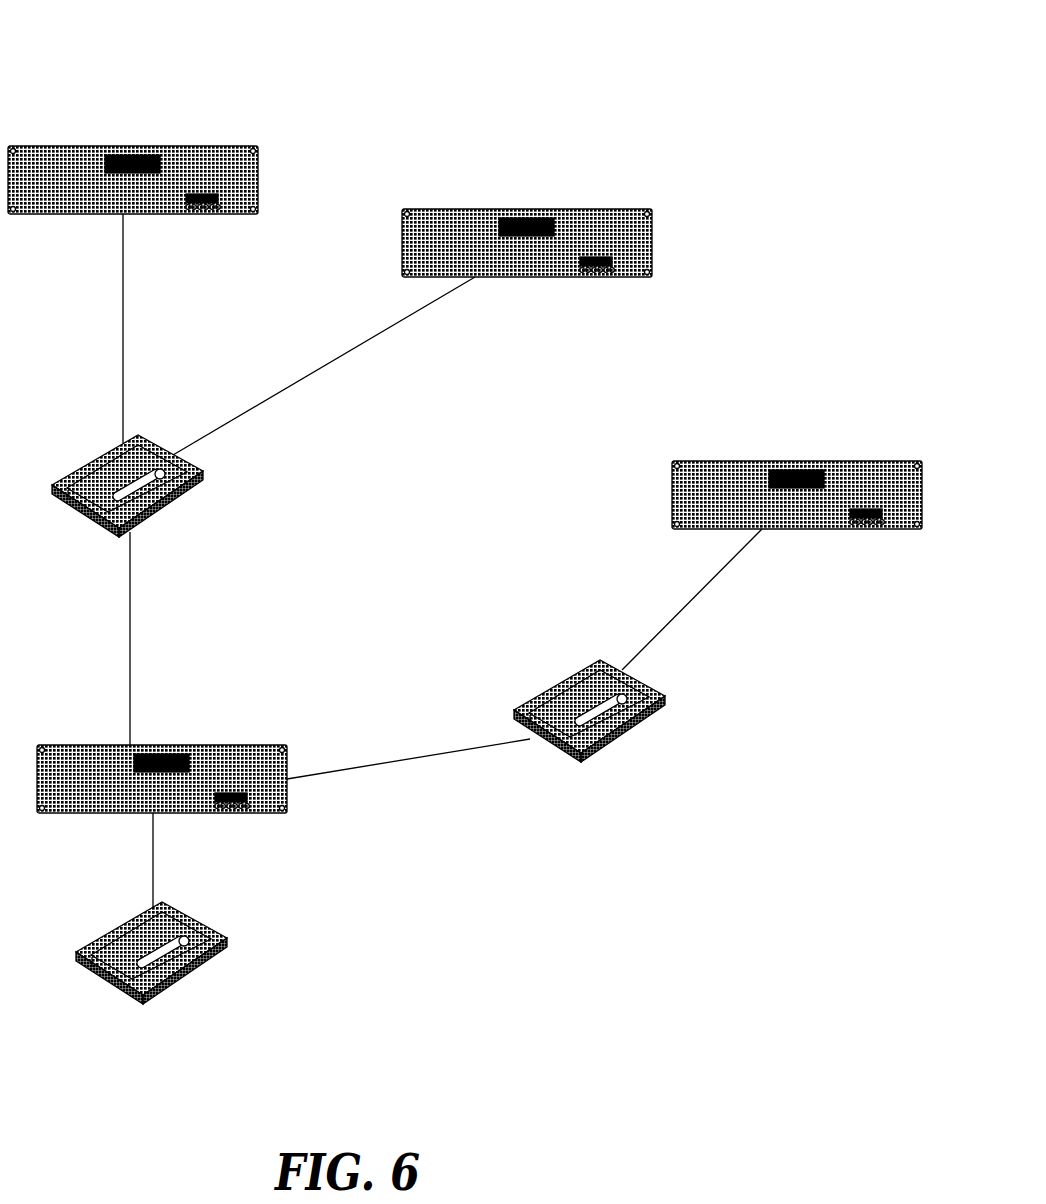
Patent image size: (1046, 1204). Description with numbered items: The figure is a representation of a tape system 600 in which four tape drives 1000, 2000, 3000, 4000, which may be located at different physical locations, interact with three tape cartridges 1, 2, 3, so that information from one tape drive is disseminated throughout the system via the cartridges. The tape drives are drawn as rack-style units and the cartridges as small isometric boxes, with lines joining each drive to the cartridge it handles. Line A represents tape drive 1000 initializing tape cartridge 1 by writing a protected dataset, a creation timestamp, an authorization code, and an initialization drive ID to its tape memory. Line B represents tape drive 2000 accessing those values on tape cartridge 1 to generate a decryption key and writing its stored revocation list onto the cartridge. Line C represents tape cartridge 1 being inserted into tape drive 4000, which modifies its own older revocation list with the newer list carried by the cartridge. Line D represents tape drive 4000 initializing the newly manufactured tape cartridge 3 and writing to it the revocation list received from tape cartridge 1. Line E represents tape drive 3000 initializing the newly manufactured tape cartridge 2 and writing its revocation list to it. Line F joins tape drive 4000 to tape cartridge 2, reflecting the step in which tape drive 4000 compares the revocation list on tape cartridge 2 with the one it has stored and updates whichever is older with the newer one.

The tape system 600 is at (131, 58).
The tape drive 1000 is at (24, 146).
The tape drive 2000 is at (591, 209).
The tape drive 3000 is at (703, 461).
The tape drive 4000 is at (203, 745).
The tape cartridge 1 is at (146, 449).
The tape cartridge 2 is at (547, 690).
The tape cartridge 3 is at (210, 932).
The line A is at (122, 345).
The line B is at (310, 372).
The line C is at (127, 643).
The line D is at (152, 862).
The line E is at (669, 621).
The line F is at (375, 762).